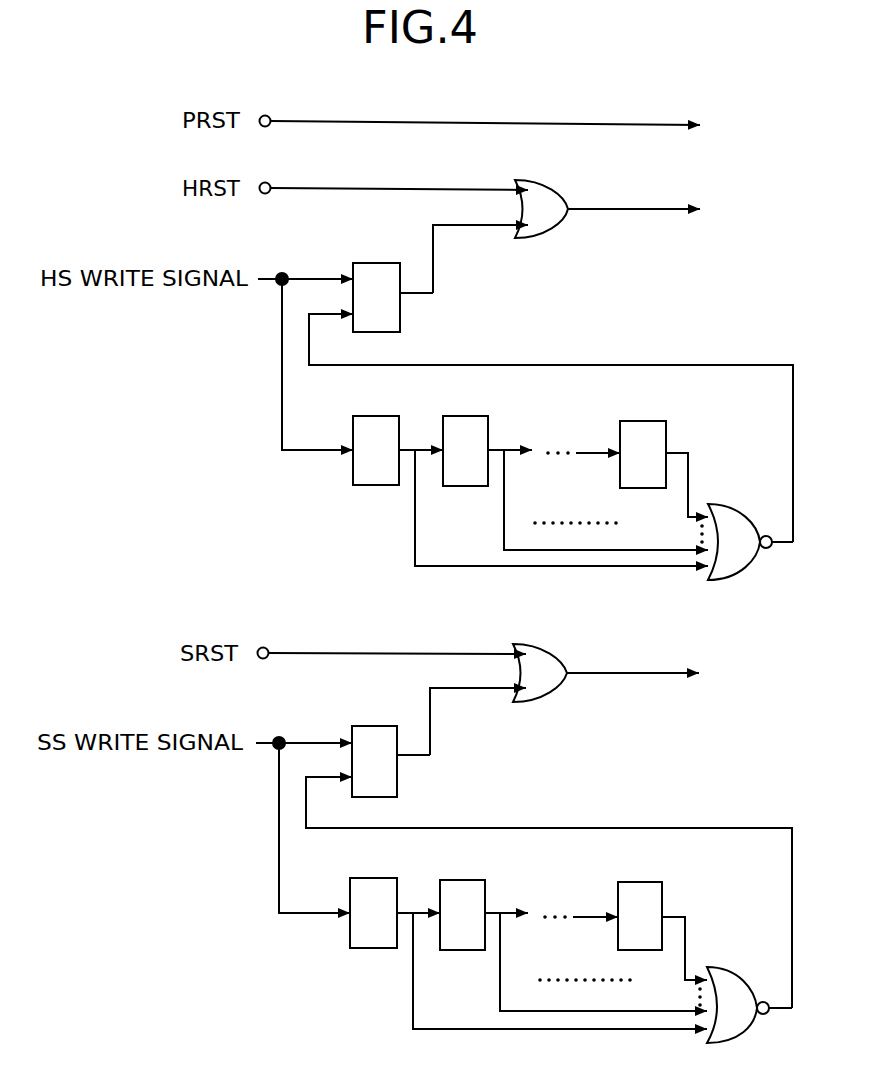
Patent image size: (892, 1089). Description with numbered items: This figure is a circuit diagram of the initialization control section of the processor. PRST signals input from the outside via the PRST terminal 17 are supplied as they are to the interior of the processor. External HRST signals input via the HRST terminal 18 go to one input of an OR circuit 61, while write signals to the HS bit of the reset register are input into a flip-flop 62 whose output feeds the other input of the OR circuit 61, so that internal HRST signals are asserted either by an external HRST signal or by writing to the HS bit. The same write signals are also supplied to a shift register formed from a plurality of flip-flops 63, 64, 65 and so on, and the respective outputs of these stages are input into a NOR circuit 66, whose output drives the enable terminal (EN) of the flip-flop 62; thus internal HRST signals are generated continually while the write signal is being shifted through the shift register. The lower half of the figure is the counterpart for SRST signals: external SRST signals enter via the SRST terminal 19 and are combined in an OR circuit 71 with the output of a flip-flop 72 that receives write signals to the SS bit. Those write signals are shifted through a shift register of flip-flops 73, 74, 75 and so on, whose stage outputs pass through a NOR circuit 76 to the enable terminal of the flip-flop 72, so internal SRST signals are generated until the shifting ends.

The PRST terminal 17 is at (268, 115).
The HRST terminal 18 is at (268, 182).
The SRST terminal 19 is at (266, 647).
The OR circuit 61 is at (533, 181).
The flip-flop 62 is at (366, 268).
The flip-flop 63 is at (366, 422).
The flip-flop 64 is at (456, 422).
The flip-flop 65 is at (633, 427).
The NOR circuit 66 is at (724, 505).
The OR circuit 71 is at (531, 645).
The flip-flop 72 is at (364, 732).
The flip-flop 73 is at (364, 884).
The flip-flop 74 is at (453, 886).
The flip-flop 75 is at (631, 888).
The NOR circuit 76 is at (722, 968).